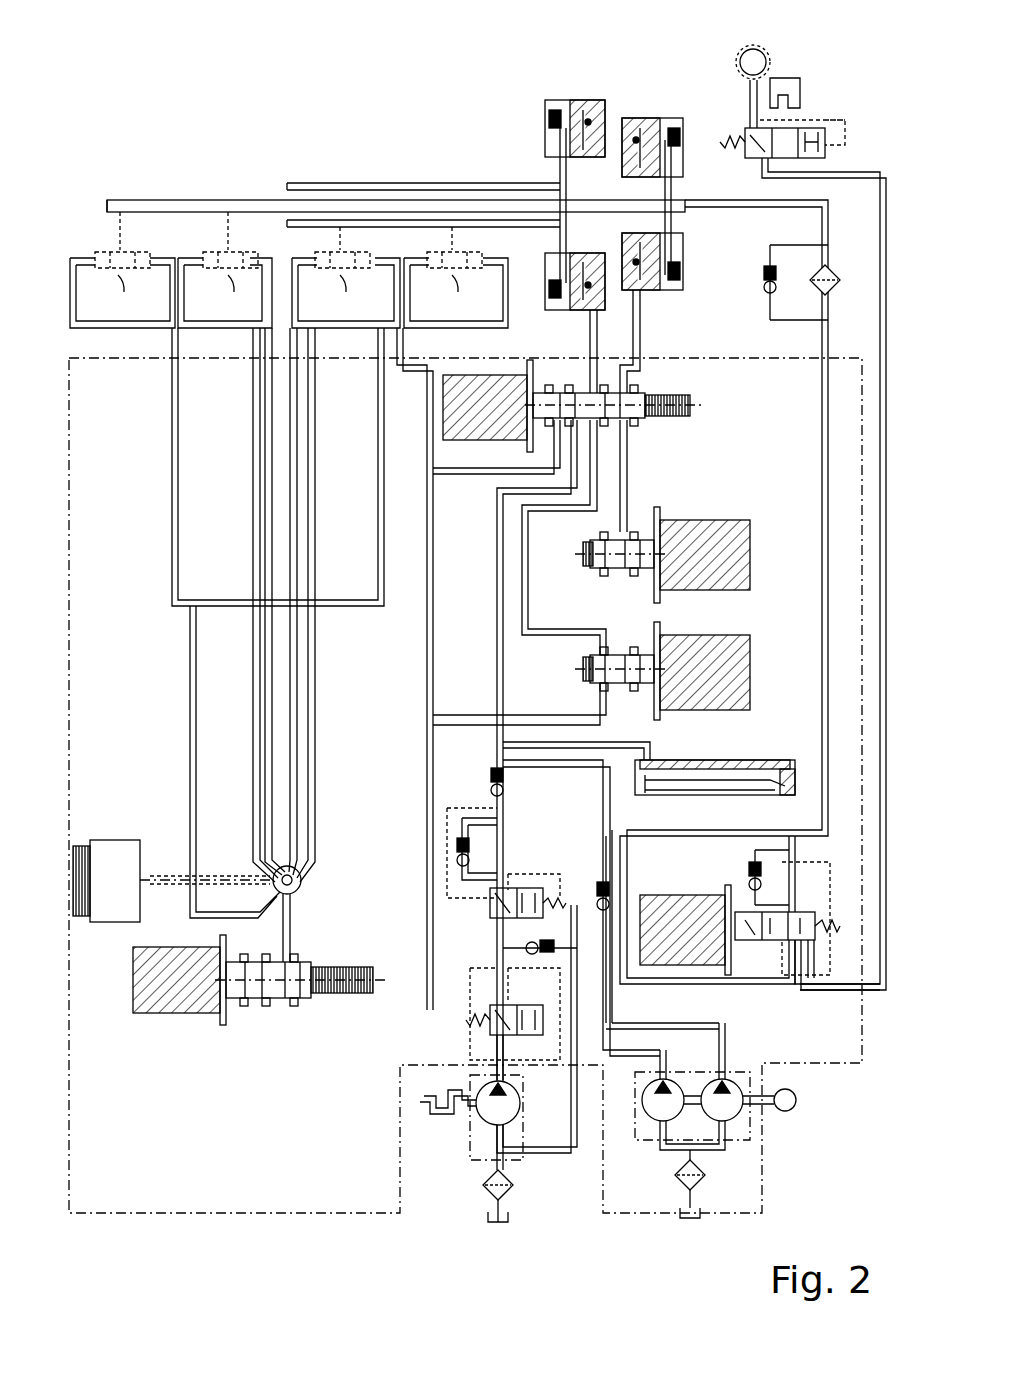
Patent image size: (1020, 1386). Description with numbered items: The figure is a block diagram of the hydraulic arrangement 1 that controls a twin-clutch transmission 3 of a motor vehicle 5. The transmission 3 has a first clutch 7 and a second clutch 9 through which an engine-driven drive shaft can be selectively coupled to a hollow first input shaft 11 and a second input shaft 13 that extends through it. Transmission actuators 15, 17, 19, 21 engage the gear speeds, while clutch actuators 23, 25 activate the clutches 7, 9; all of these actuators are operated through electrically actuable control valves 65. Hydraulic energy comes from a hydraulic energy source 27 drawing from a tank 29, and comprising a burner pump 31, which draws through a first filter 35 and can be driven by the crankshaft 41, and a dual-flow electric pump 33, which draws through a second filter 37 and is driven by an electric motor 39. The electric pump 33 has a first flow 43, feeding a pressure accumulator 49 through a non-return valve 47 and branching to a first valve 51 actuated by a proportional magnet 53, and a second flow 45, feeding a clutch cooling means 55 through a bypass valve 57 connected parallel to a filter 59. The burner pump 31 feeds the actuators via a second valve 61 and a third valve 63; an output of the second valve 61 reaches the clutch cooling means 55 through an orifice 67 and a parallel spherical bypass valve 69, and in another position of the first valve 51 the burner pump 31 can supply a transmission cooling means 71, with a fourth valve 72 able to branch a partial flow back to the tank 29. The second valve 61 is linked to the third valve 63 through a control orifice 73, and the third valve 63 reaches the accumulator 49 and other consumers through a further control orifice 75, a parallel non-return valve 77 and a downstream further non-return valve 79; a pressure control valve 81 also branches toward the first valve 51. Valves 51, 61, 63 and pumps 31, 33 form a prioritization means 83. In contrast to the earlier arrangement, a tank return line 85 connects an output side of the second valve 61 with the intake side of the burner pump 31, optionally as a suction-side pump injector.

The hydraulic arrangement 1 is at (225, 130).
The twin-clutch transmission 3 is at (380, 172).
The motor vehicle 5 is at (143, 191).
The first clutch 7 is at (545, 118).
The second clutch 9 is at (655, 125).
The first input shaft 11 is at (316, 185).
The second input shaft 13 is at (183, 210).
The transmission actuator 15 is at (122, 270).
The transmission actuator 17 is at (225, 270).
The transmission actuator 19 is at (346, 277).
The transmission actuator 21 is at (456, 277).
The clutch actuator 23 is at (590, 120).
The clutch actuator 25 is at (635, 135).
The hydraulic energy source 27 is at (608, 1180).
The tank 29 is at (496, 1226).
The burner pump 31 is at (485, 1115).
The dual-flow electric pump 33 is at (735, 1075).
The first filter 35 is at (505, 1196).
The second filter 37 is at (705, 1175).
The electric motor 39 is at (798, 1106).
The crankshaft 41 is at (420, 1100).
The first flow 43 is at (655, 1115).
The second flow 45 is at (735, 1115).
The non-return valve 47 is at (603, 893).
The pressure accumulator 49 is at (765, 760).
The first valve 51 is at (805, 945).
The proportional magnet 53 is at (676, 965).
The clutch cooling means 55 is at (688, 222).
The bypass valve 57 is at (764, 283).
The filter 59 is at (832, 272).
The second valve 61 is at (490, 1035).
The third valve 63 is at (490, 906).
The control valves 65 is at (450, 420).
The orifice 67 is at (792, 880).
The spherical bypass valve 69 is at (745, 876).
The transmission cooling means 71 is at (812, 75).
The fourth valve 72 is at (818, 130).
The control orifice 73 is at (490, 980).
The further control orifice 75 is at (500, 865).
The non-return valve 77 is at (455, 850).
The further non-return valve 79 is at (490, 782).
The pressure control valve 81 is at (530, 950).
The prioritization means 83 is at (818, 1032).
The tank return line 85 is at (570, 1152).